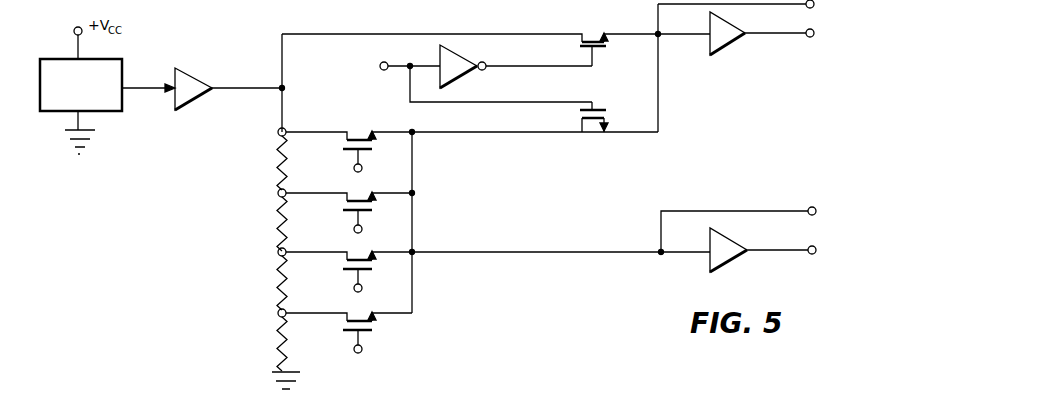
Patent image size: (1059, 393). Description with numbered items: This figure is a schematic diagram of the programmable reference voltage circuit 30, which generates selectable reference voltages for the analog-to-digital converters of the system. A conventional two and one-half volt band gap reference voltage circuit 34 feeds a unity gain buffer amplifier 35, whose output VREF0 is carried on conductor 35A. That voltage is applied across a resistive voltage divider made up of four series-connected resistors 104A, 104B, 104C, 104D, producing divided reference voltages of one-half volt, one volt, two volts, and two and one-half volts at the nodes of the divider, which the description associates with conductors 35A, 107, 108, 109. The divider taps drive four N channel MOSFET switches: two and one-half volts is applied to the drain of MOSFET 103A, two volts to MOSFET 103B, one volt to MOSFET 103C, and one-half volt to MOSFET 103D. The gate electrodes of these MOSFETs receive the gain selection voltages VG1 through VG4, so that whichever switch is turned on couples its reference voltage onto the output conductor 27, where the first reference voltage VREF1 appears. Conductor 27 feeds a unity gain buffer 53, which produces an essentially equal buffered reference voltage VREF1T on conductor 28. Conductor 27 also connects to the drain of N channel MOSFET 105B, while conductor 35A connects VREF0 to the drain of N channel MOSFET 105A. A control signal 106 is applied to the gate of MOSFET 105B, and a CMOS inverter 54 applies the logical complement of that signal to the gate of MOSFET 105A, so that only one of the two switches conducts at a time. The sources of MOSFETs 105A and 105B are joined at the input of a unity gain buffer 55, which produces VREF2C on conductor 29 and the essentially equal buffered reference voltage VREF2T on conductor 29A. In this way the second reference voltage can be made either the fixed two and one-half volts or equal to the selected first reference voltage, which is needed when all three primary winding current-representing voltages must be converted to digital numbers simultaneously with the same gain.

The band gap reference voltage circuit 34 is at (121, 60).
The unity gain buffer amplifier 35 is at (185, 69).
The conductor 35A is at (252, 86).
The programmable reference voltage circuit 30 is at (223, 257).
The conductor 107 is at (279, 183).
The conductor 108 is at (279, 243).
The conductor 109 is at (279, 303).
The N channel MOSFET 103A is at (347, 141).
The N channel MOSFET 103B is at (347, 202).
The N channel MOSFET 103C is at (347, 261).
The N channel MOSFET 103D is at (347, 322).
The resistor 104A is at (283, 180).
The resistor 104B is at (283, 240).
The resistor 104C is at (283, 300).
The resistor 104D is at (283, 360).
The control signal 106 is at (381, 68).
The CMOS inverter 54 is at (484, 70).
The N channel MOSFET 105A is at (580, 37).
The N channel MOSFET 105B is at (582, 126).
The unity gain buffer 55 is at (728, 58).
The conductor 29 is at (808, 8).
The conductor 29A is at (807, 37).
The output conductor 27 is at (518, 251).
The conductor 28 is at (811, 255).
The unity gain buffer 53 is at (709, 260).